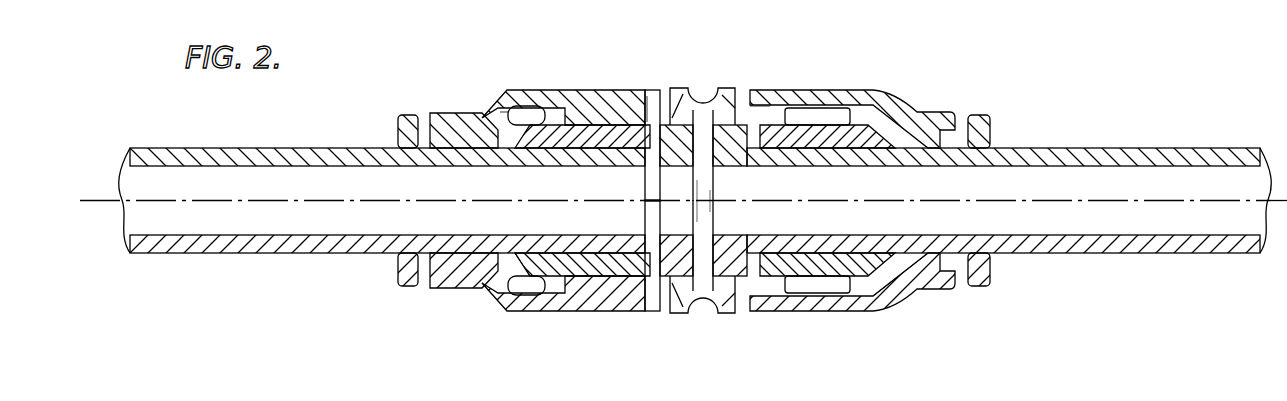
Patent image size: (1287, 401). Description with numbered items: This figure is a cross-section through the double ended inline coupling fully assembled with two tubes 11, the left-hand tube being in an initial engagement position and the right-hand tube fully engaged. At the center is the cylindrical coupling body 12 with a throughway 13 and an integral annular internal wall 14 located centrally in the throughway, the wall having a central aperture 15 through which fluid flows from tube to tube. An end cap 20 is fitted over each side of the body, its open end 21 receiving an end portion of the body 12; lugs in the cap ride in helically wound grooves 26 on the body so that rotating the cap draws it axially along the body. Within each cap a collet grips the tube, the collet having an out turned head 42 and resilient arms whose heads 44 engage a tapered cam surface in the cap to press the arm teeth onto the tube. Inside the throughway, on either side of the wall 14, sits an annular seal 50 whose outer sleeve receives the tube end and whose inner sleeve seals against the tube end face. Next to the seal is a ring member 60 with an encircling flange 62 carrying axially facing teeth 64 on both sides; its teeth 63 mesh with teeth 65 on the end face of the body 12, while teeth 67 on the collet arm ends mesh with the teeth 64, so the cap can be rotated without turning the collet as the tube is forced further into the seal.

The tube 11 is at (234, 148).
The coupling body 12 is at (678, 95).
The throughway 13 is at (590, 108).
The annular internal wall 14 is at (700, 185).
The central aperture 15 is at (712, 190).
The end cap 20 is at (585, 312).
The open end 21 is at (650, 96).
The helically wound groove 26 is at (752, 108).
The out turned head 42 is at (398, 124).
The head 44 is at (497, 116).
The annular seal 50 is at (690, 268).
The ring member 60 is at (562, 310).
The encircling flange 62 is at (518, 308).
The teeth 63 is at (877, 312).
The teeth 64 is at (538, 118).
The teeth 65 is at (800, 312).
The teeth 67 is at (508, 118).